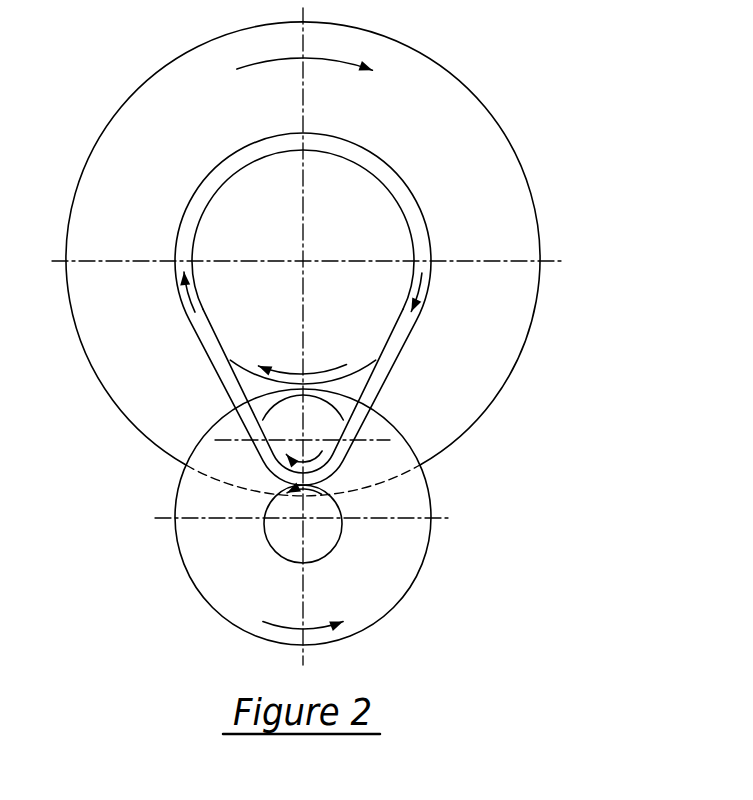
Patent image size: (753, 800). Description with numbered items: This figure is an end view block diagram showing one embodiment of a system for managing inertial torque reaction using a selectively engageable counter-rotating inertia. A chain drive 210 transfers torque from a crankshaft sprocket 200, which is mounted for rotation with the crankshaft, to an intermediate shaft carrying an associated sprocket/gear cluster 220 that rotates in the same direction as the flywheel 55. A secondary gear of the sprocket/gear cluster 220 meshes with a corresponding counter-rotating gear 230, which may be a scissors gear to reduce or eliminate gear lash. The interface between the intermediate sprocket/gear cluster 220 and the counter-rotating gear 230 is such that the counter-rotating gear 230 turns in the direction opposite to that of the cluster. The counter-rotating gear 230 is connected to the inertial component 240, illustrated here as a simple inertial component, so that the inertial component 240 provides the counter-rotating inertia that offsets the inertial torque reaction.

The flywheel 55 is at (478, 95).
The crankshaft sprocket 200 is at (375, 232).
The chain drive 210 is at (431, 246).
The sprocket/gear cluster 220 is at (298, 444).
The counter-rotating gear 230 is at (282, 527).
The inertial component 240 is at (390, 581).